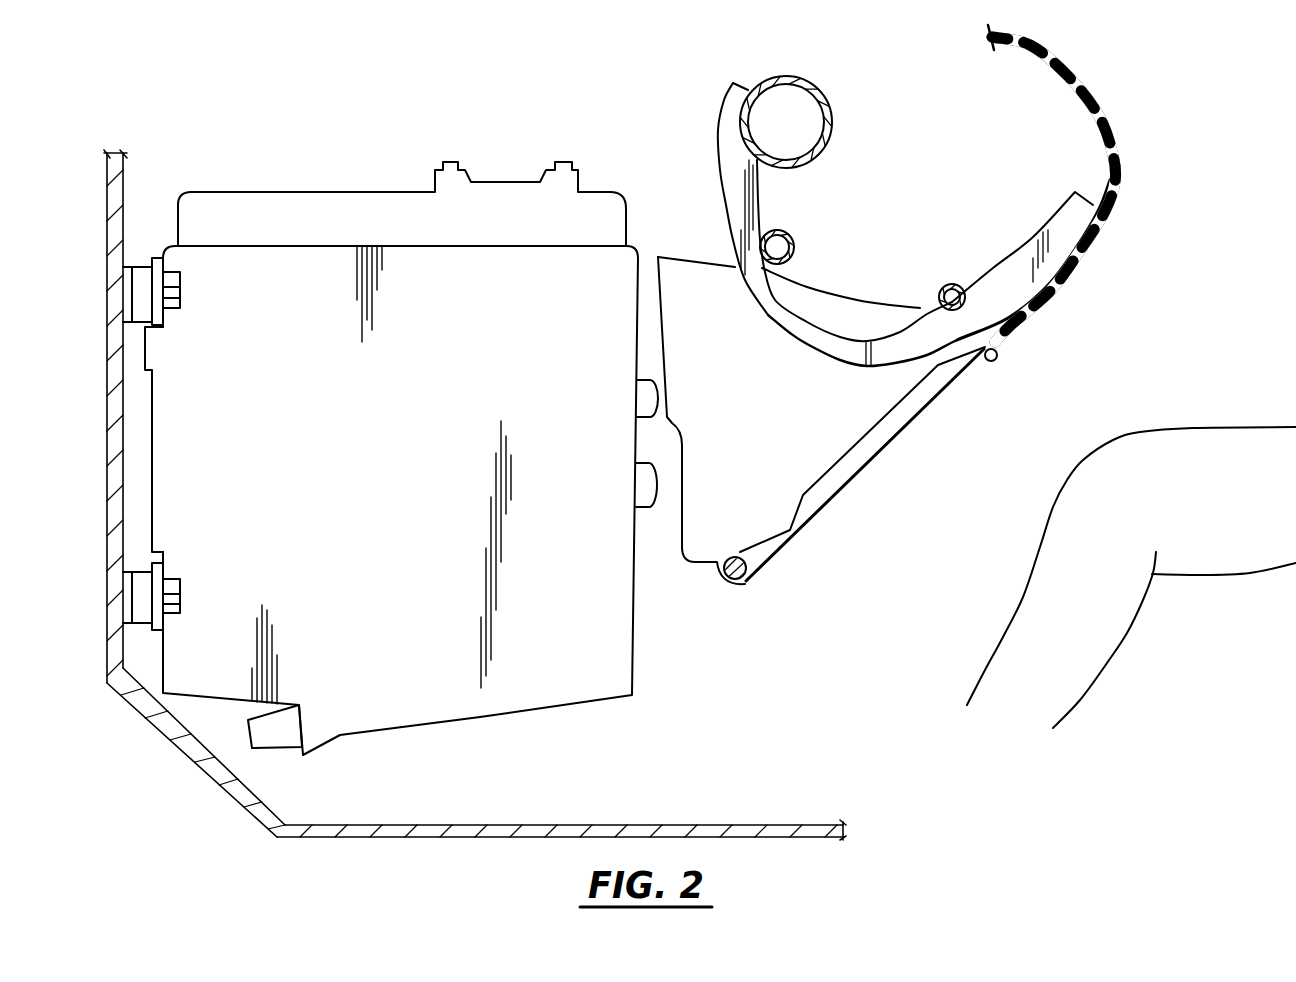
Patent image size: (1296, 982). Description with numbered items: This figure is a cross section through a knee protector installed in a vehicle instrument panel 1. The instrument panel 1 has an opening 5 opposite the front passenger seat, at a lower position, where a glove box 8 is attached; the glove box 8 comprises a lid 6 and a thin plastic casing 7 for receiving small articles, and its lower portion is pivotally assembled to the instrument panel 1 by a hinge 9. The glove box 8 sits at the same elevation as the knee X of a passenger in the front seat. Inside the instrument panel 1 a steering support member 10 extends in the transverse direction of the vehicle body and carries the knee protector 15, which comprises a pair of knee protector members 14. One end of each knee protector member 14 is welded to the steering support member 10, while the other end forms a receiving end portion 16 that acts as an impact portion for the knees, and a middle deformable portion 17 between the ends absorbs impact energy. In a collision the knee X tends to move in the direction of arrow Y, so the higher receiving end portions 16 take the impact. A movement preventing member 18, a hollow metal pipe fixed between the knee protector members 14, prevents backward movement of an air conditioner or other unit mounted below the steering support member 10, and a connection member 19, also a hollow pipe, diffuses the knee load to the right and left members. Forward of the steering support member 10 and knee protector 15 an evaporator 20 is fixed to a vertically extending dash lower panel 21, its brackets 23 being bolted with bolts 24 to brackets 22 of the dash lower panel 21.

The instrument panel 1 is at (1097, 104).
The opening 5 is at (995, 361).
The lid 6 is at (820, 520).
The casing 7 is at (690, 565).
The glove box 8 is at (925, 468).
The hinge 9 is at (744, 580).
The steering support member 10 is at (826, 101).
The knee protector member 14 is at (729, 193).
The knee protector 15 is at (740, 332).
The receiving end portion 16 is at (1007, 272).
The deformable portion 17 is at (830, 346).
The movement preventing member 18 is at (786, 233).
The connection member 19 is at (943, 288).
The evaporator 20 is at (486, 182).
The dash lower panel 21 is at (125, 445).
The bracket 22 is at (127, 272).
The bracket 23 is at (162, 313).
The bolt 24 is at (180, 292).
The passenger's knee X is at (1064, 480).
The arrow Y is at (1085, 418).